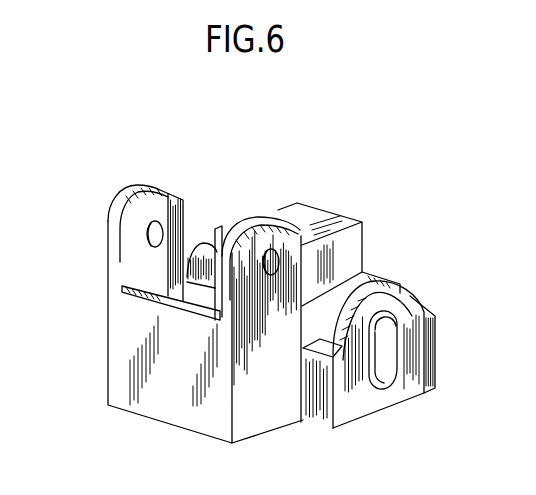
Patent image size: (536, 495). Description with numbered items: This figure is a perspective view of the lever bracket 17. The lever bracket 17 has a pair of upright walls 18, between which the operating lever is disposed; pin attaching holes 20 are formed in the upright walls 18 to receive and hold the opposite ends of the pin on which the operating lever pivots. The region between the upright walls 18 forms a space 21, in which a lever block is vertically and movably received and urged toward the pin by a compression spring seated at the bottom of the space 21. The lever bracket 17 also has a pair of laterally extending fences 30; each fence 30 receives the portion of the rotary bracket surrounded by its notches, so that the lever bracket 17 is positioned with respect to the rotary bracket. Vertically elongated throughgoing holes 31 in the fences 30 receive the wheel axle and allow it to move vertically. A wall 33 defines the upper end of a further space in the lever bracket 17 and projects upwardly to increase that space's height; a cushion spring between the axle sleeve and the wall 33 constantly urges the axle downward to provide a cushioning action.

The lever bracket 17 is at (343, 183).
The upright walls 18 is at (117, 230).
The pin attaching holes 20 is at (150, 223).
The space 21 is at (167, 287).
The fences 30 is at (345, 413).
The vertically elongated throughgoing holes 31 is at (397, 382).
The wall 33 is at (345, 222).